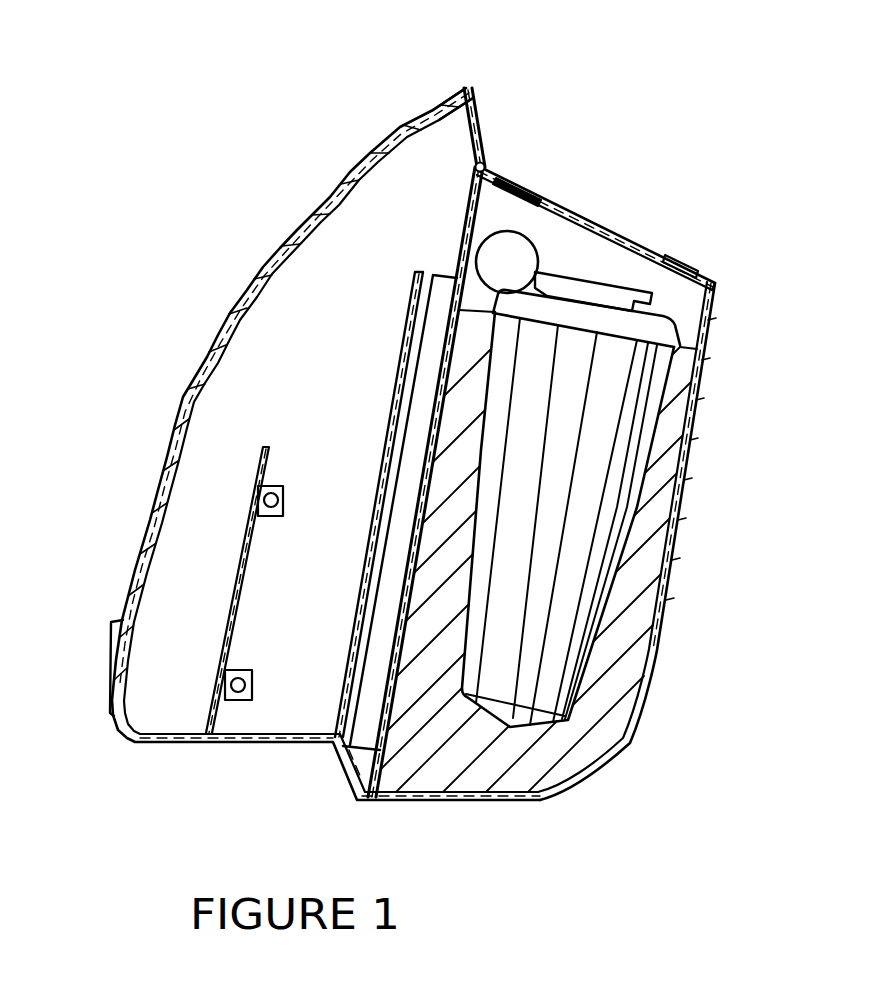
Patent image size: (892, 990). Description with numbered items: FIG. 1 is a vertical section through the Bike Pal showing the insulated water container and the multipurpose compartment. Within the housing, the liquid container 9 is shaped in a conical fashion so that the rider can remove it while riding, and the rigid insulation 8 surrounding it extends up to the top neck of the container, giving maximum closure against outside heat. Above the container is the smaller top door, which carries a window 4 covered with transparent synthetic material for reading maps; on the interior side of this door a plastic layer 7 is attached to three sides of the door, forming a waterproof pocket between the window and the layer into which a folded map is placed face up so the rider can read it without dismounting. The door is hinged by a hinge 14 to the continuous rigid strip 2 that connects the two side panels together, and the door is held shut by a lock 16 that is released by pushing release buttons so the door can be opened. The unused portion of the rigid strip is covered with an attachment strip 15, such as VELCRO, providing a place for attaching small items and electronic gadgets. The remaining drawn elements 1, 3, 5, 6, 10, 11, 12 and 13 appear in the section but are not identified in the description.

The dispenser assembly 1 is at (387, 133).
The rigid strip 2 is at (480, 130).
The latch 3 is at (533, 187).
The window 4 is at (577, 175).
The lid panel 5 is at (596, 232).
The lid stop 6 is at (718, 284).
The plastic layer 7 is at (530, 240).
The rigid insulation 8 is at (690, 450).
The liquid container 9 is at (603, 533).
The inner wall 10 is at (440, 385).
The upper clip 11 is at (405, 530).
The lower clip 12 is at (355, 623).
The mounting flange 13 is at (110, 677).
The hinge 14 is at (463, 187).
The attachment strip 15 is at (470, 104).
The lock 16 is at (720, 297).